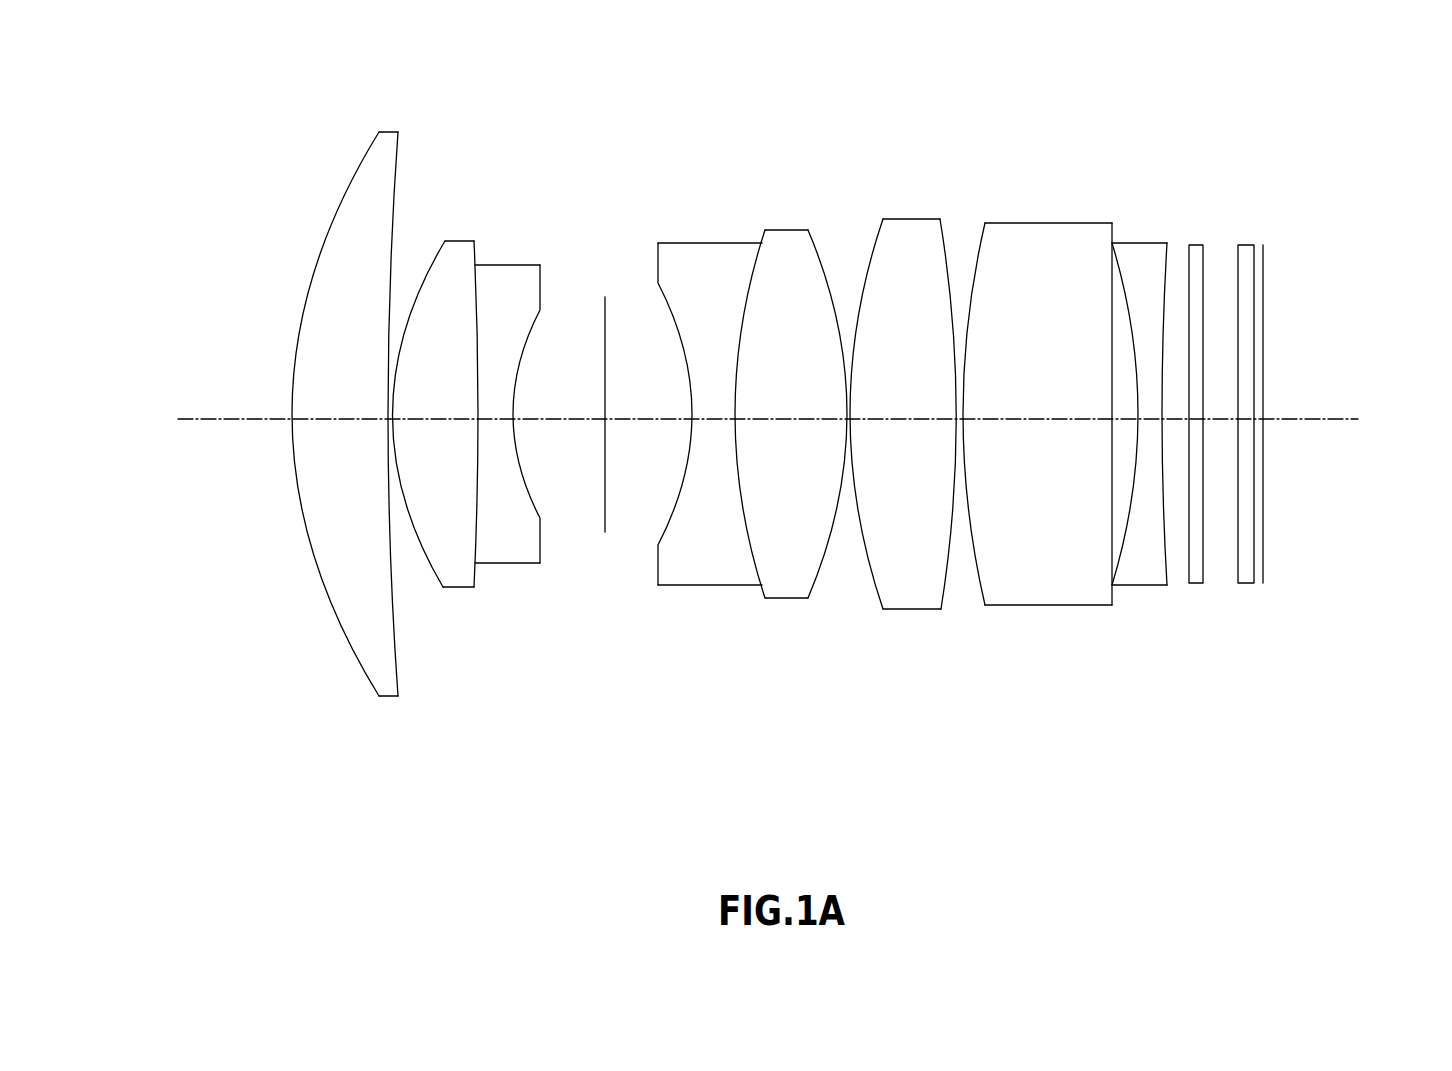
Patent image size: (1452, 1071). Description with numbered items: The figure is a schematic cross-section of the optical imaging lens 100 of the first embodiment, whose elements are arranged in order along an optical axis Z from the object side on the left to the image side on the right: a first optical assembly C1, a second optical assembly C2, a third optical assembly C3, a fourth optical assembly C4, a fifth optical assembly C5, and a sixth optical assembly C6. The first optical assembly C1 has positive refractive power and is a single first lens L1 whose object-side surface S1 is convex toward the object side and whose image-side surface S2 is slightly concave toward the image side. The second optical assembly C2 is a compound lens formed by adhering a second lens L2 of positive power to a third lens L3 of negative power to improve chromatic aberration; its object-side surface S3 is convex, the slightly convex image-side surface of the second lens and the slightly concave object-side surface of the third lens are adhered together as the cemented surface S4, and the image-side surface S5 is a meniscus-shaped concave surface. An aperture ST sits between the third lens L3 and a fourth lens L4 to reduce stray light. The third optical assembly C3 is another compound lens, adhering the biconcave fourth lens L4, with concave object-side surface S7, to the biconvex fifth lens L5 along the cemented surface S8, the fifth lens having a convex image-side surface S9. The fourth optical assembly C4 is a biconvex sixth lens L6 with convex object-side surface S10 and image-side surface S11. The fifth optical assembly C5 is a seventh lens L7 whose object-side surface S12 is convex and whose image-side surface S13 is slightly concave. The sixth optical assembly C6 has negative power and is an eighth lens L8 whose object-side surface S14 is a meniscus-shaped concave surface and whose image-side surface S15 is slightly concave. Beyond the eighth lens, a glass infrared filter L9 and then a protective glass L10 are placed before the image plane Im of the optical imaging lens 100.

The optical imaging lens 100 is at (256, 331).
The optical axis Z is at (759, 418).
The aperture ST is at (605, 310).
The image plane Im is at (1263, 330).
The first optical assembly C1 is at (268, 213).
The second optical assembly C2 is at (506, 180).
The third optical assembly C3 is at (765, 180).
The fourth optical assembly C4 is at (898, 175).
The fifth optical assembly C5 is at (1007, 185).
The sixth optical assembly C6 is at (1122, 195).
The first lens L1 is at (363, 182).
The second lens L2 is at (450, 252).
The third lens L3 is at (525, 277).
The fourth lens L4 is at (710, 255).
The fifth lens L5 is at (790, 252).
The sixth lens L6 is at (908, 242).
The seventh lens L7 is at (1038, 242).
The eighth lens L8 is at (1135, 250).
The infrared filter L9 is at (1190, 250).
The protective glass L10 is at (1243, 248).
The object-side surface of the first lens S1 is at (353, 652).
The image-side surface of the first lens S2 is at (395, 658).
The object-side surface of the second lens S3 is at (427, 560).
The cemented surface between the second lens and third lens S4 is at (475, 533).
The image-side surface of the third lens S5 is at (535, 502).
The object-side surface of the fourth lens S7 is at (672, 518).
The cemented surface between the fourth lens and fifth lens S8 is at (757, 560).
The image-side surface of the fifth lens S9 is at (825, 552).
The object-side surface of the sixth lens S10 is at (876, 586).
The image-side surface of the sixth lens S11 is at (945, 572).
The object-side surface of the seventh lens S12 is at (980, 577).
The image-side surface of the seventh lens S13 is at (1127, 518).
The object-side surface of the eighth lens S14 is at (1108, 570).
The image-side surface of the eighth lens S15 is at (1163, 558).